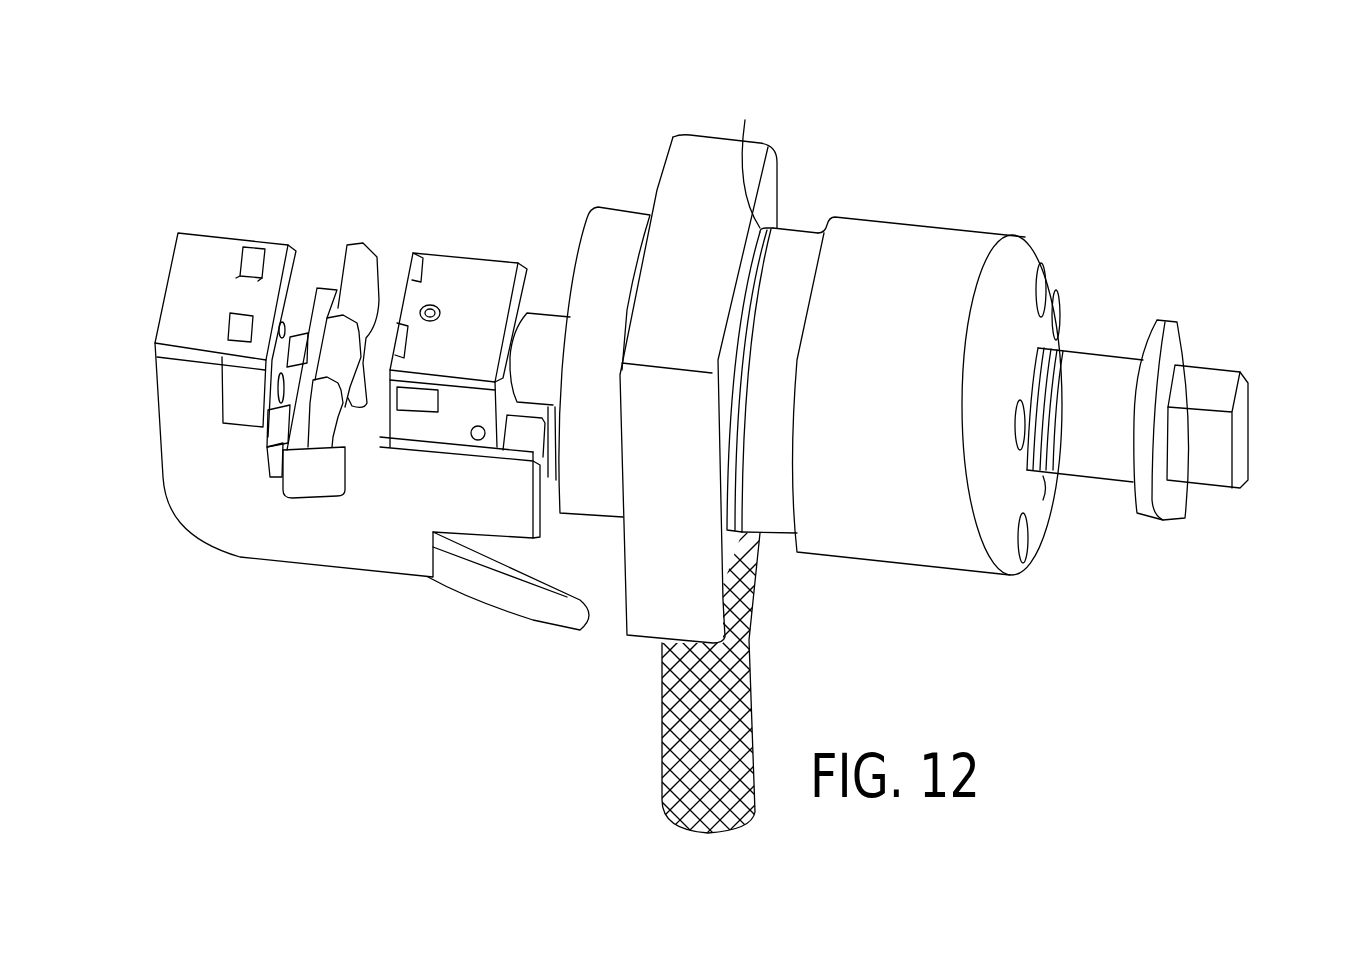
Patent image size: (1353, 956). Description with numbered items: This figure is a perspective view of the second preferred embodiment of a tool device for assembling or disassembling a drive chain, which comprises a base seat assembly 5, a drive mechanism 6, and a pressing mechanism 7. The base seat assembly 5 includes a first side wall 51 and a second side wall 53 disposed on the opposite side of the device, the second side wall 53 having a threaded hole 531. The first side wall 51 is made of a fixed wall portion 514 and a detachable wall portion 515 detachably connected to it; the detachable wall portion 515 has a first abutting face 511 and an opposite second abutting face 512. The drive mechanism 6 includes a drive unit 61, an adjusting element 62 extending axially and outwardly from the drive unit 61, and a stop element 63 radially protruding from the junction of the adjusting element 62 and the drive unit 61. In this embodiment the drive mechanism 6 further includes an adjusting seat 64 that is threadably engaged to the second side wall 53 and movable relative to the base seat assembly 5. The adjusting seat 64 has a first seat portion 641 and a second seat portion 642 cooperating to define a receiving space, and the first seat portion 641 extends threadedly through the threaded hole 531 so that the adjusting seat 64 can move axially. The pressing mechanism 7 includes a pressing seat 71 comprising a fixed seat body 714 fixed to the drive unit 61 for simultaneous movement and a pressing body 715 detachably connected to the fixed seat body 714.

The base seat assembly 5 is at (217, 553).
The first side wall 51 is at (318, 158).
The first abutting face 511 is at (288, 290).
The second abutting face 512 is at (217, 285).
The fixed wall portion 514 is at (222, 240).
The detachable wall portion 515 is at (280, 240).
The second side wall 53 is at (678, 175).
The threaded hole 531 is at (760, 228).
The drive mechanism 6 is at (1078, 592).
The drive unit 61 is at (1105, 352).
The adjusting element 62 is at (1243, 440).
The stop element 63 is at (1180, 338).
The adjusting seat 64 is at (973, 232).
The first seat portion 641 is at (793, 253).
The second seat portion 642 is at (890, 247).
The pressing mechanism 7 is at (508, 245).
The pressing seat 71 is at (505, 170).
The fixed seat body 714 is at (487, 285).
The pressing body 715 is at (442, 277).